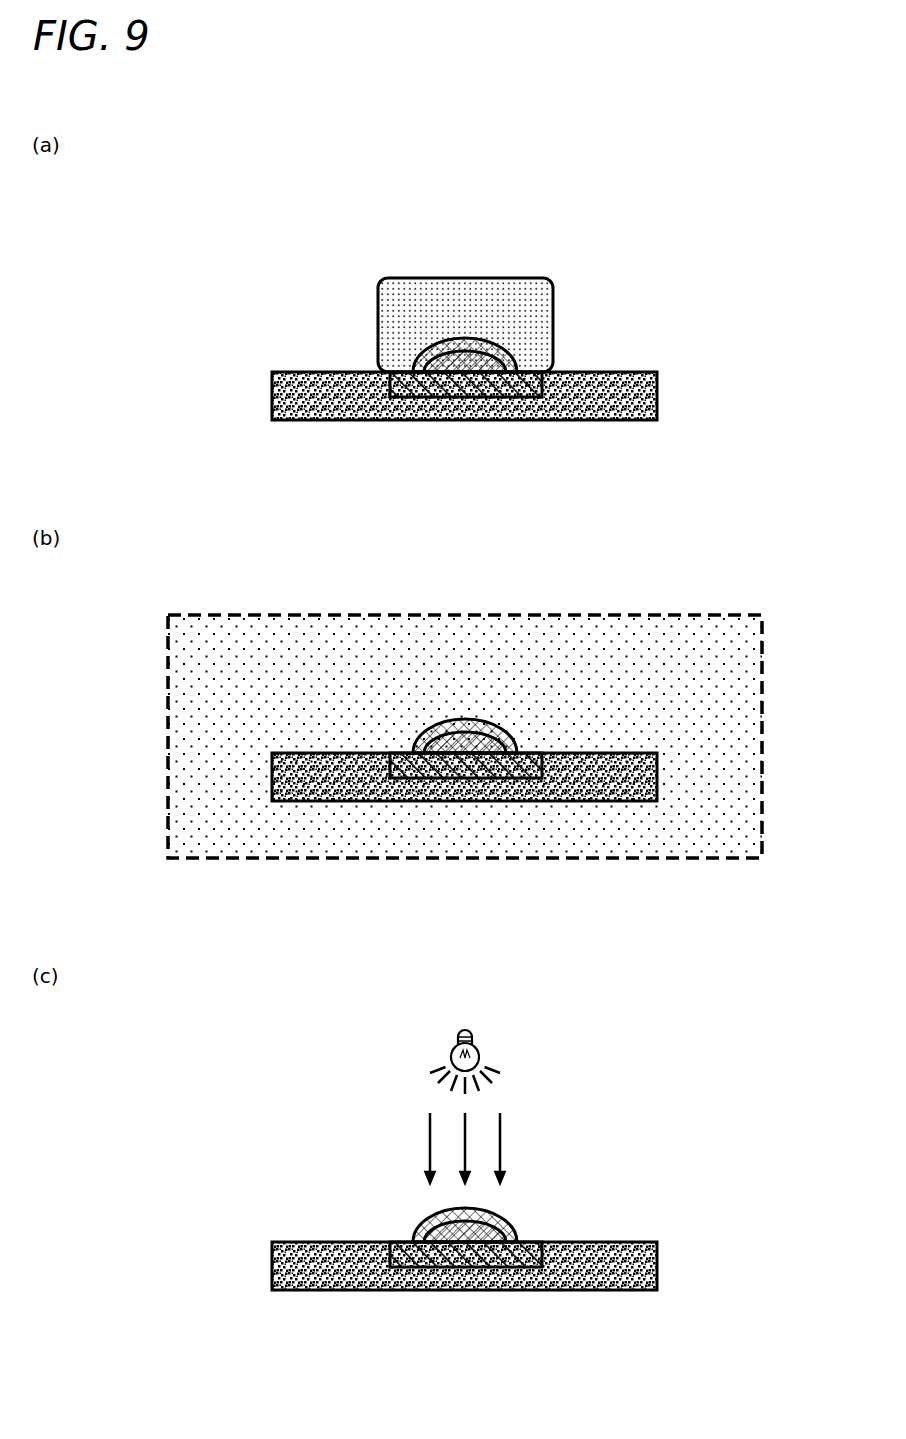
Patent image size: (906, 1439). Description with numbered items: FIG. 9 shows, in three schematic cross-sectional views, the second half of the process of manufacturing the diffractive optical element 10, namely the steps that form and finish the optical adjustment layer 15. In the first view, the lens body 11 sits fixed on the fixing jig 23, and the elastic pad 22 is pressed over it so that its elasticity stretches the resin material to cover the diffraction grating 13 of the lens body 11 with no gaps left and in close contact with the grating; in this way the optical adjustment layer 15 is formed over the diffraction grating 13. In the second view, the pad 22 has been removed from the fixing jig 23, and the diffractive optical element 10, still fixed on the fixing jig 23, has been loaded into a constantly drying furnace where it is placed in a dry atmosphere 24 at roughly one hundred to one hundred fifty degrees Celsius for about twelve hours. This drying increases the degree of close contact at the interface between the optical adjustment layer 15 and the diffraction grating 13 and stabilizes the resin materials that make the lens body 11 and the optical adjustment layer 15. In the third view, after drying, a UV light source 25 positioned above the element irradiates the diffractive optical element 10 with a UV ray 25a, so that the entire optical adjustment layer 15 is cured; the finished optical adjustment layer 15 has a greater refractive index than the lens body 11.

The diffractive optical element 10 is at (412, 1217).
The lens body 11 is at (505, 388).
The diffraction grating 13 is at (473, 347).
The optical adjustment layer 15 is at (508, 348).
The pad 22 is at (528, 303).
The fixing jig 23 is at (620, 393).
The dry atmosphere 24 is at (647, 648).
The UV light source 25 is at (483, 1055).
The UV ray 25a is at (507, 1137).